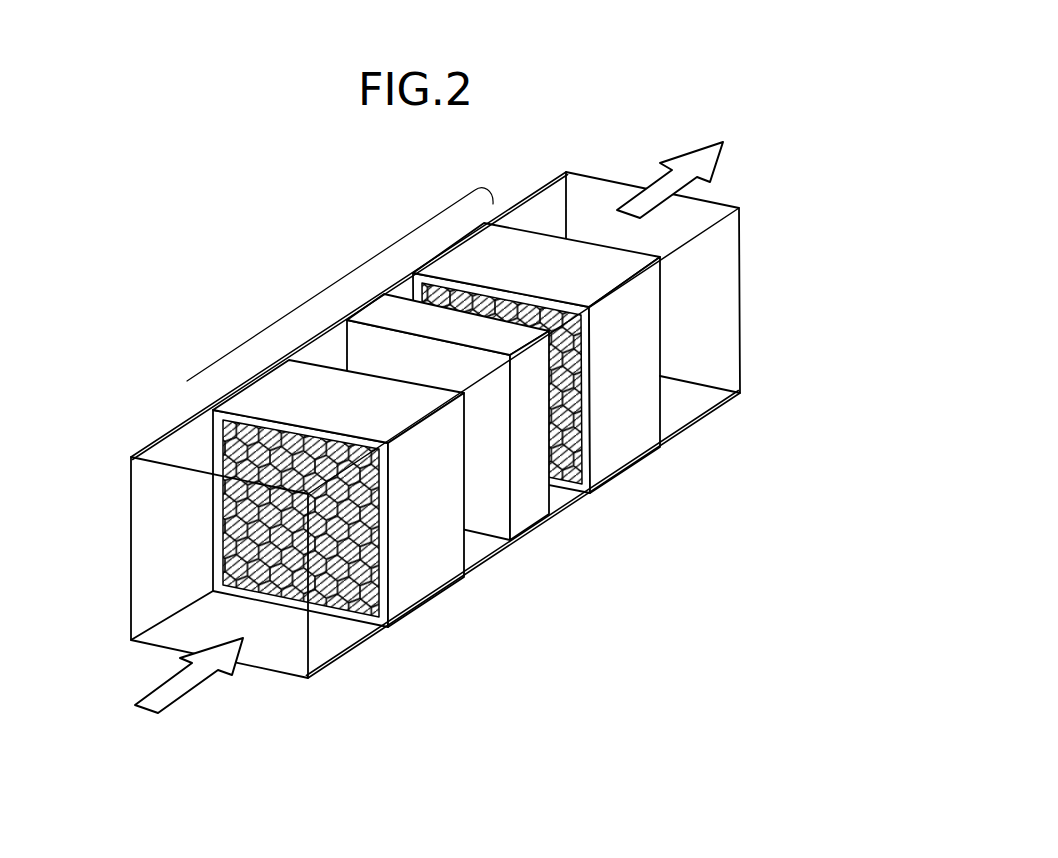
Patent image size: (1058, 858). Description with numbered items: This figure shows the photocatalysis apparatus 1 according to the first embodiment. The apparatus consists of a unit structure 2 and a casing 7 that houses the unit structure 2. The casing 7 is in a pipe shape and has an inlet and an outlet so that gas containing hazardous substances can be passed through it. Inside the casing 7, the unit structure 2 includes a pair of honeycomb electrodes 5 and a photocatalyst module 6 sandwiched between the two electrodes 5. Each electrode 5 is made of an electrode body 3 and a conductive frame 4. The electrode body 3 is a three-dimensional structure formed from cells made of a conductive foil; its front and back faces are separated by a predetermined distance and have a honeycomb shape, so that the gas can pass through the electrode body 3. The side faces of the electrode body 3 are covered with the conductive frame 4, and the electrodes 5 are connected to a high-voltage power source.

The photocatalysis apparatus 1 is at (180, 211).
The unit structure 2 is at (343, 276).
The electrode body 3 is at (271, 530).
The conductive frame 4 is at (662, 337).
The honeycomb electrode 5 is at (213, 502).
The photocatalyst module 6 is at (530, 512).
The casing 7 is at (700, 418).